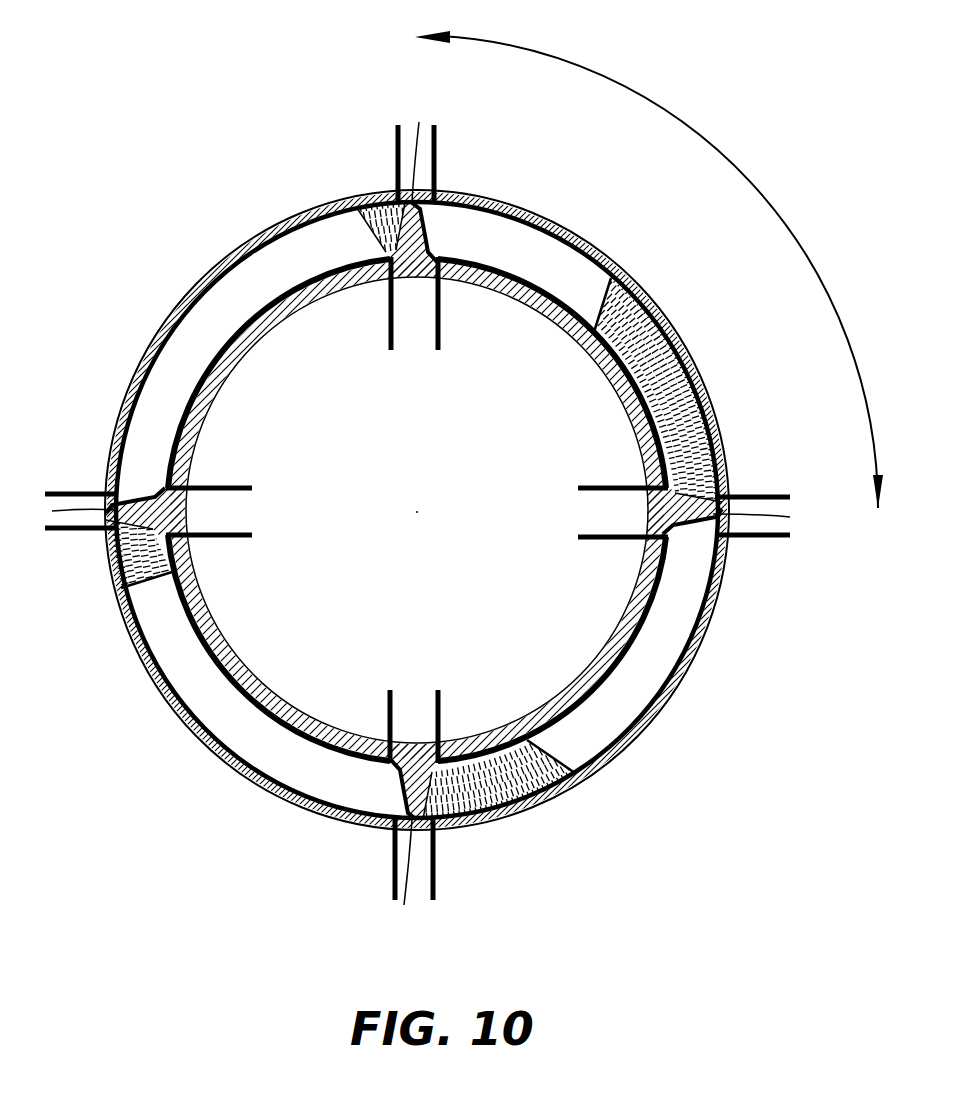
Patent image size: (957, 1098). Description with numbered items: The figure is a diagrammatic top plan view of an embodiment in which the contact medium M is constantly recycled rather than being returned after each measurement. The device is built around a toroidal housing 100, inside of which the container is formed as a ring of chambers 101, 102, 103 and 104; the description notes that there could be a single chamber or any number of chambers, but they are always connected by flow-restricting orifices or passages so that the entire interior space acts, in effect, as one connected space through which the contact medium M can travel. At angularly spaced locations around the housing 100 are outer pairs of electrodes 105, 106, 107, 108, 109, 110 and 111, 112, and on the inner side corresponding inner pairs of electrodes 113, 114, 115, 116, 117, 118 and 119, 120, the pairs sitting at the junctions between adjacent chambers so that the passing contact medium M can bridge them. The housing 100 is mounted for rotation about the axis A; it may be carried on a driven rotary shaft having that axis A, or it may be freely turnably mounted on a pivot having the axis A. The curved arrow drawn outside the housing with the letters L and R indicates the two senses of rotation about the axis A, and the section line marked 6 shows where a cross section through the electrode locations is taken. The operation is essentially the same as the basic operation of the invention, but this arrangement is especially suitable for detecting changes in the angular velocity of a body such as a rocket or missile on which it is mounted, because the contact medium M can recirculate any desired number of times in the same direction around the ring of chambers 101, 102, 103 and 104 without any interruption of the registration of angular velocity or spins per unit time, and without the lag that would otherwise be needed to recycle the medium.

The toroidal housing 100 is at (612, 251).
The chamber 101 is at (548, 340).
The chamber 102 is at (612, 662).
The chamber 103 is at (218, 658).
The chamber 104 is at (262, 333).
The outer electrode 105 is at (796, 476).
The outer electrode 106 is at (785, 542).
The outer electrode 107 is at (438, 865).
The outer electrode 108 is at (393, 862).
The outer electrode 109 is at (70, 540).
The outer electrode 110 is at (100, 492).
The outer electrode 111 is at (396, 152).
The outer electrode 112 is at (437, 151).
The inner electrode 113 is at (622, 486).
The inner electrode 114 is at (560, 540).
The inner electrode 115 is at (440, 722).
The inner electrode 116 is at (388, 720).
The inner electrode 117 is at (238, 537).
The inner electrode 118 is at (225, 486).
The inner electrode 119 is at (390, 345).
The inner electrode 120 is at (441, 333).
The contact medium M is at (680, 400).
The axis A is at (418, 514).
The left rotation direction L is at (628, 265).
The right rotation direction R is at (877, 511).
The section line 6- 6 is at (415, 513).